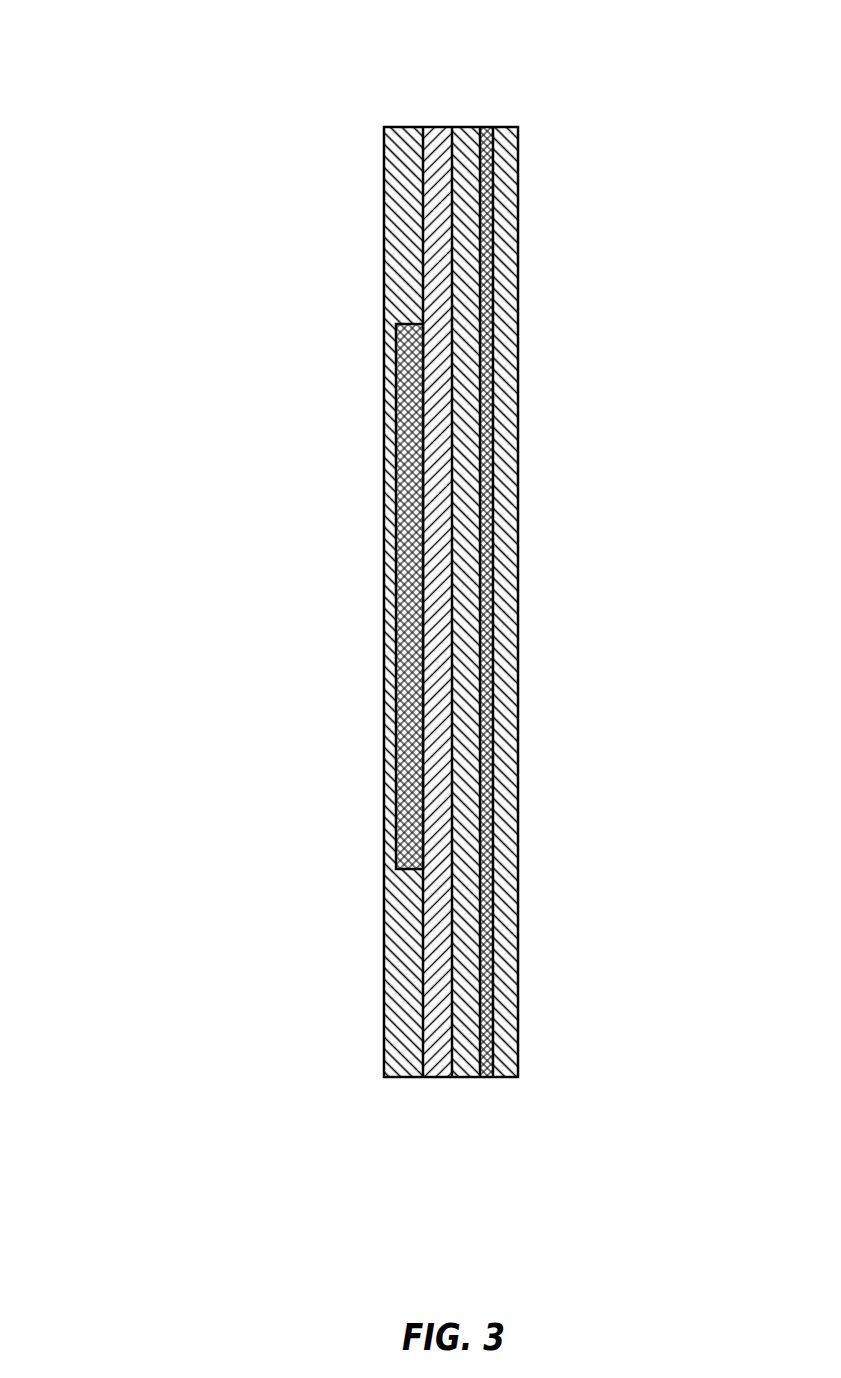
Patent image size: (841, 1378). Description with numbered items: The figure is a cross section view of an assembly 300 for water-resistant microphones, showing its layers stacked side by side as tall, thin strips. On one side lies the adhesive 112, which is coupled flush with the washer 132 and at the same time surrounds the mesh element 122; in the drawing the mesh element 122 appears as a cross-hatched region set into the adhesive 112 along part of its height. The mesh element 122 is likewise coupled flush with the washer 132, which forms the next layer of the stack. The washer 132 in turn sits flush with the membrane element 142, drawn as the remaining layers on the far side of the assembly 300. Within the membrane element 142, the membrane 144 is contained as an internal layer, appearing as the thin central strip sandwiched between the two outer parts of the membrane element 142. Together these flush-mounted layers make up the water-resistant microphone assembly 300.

The assembly 300 is at (121, 86).
The adhesive 112 is at (408, 172).
The mesh element 122 is at (413, 392).
The washer 132 is at (438, 1057).
The membrane element 142 is at (491, 153).
The membrane 144 is at (487, 1060).